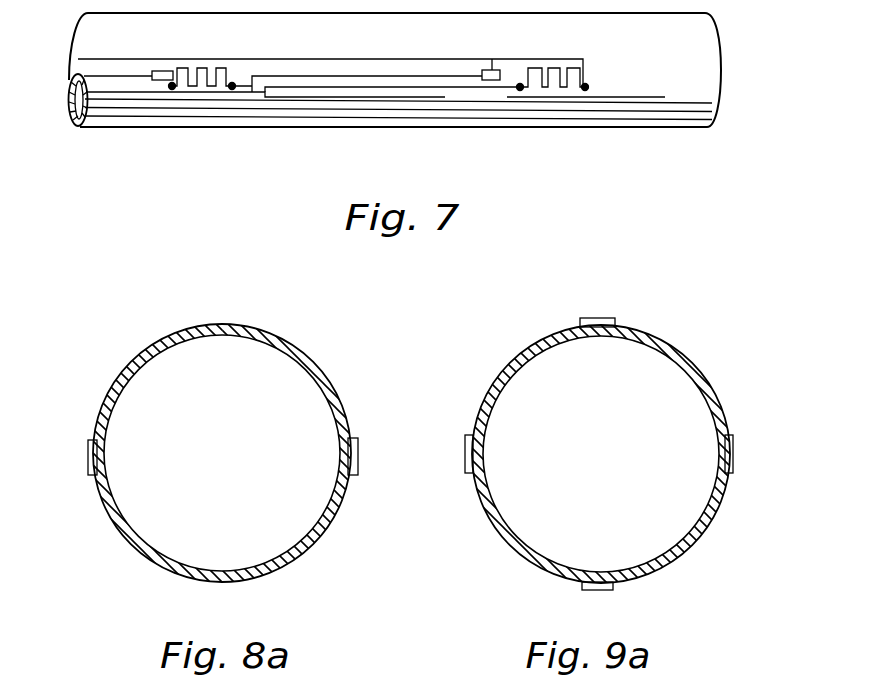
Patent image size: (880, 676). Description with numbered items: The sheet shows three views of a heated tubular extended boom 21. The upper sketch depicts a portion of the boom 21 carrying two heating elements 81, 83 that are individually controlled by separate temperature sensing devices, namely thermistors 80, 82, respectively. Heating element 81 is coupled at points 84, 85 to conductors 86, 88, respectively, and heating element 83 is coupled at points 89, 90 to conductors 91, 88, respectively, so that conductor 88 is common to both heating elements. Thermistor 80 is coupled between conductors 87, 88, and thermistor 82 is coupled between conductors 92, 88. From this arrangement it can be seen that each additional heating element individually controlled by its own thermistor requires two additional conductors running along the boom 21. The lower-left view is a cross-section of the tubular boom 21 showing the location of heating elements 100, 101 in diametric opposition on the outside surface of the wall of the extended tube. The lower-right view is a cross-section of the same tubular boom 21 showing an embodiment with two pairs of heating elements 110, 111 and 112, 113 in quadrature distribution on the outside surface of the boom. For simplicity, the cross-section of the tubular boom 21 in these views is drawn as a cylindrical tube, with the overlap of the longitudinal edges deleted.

In FIG. 7, the extended boom 21 is at (655, 54).
In FIG. 8A, the extended boom 21 is at (323, 380).
In FIG. 9A, the extended boom 21 is at (703, 392).
In FIG. 7, the thermistor 80 is at (172, 71).
In FIG. 7, the heating element 81 is at (212, 88).
In FIG. 7, the thermistor 82 is at (482, 69).
In FIG. 7, the heating element 83 is at (548, 88).
In FIG. 7, the coupling point 84 is at (173, 88).
In FIG. 7, the coupling point 85 is at (232, 86).
In FIG. 7, the conductor 86 is at (132, 92).
In FIG. 7, the conductor 87 is at (122, 75).
In FIG. 7, the conductor 88 is at (275, 60).
In FIG. 7, the coupling point 89 is at (520, 86).
In FIG. 7, the coupling point 90 is at (585, 87).
In FIG. 7, the conductor 91 is at (465, 87).
In FIG. 7, the conductor 92 is at (388, 76).
In FIG. 8A, the heating element 100 is at (88, 447).
In FIG. 8A, the heating element 101 is at (358, 447).
In FIG. 9A, the heating element 110 is at (467, 467).
In FIG. 9A, the heating element 111 is at (733, 463).
In FIG. 9A, the heating element 112 is at (607, 319).
In FIG. 9A, the heating element 113 is at (608, 589).